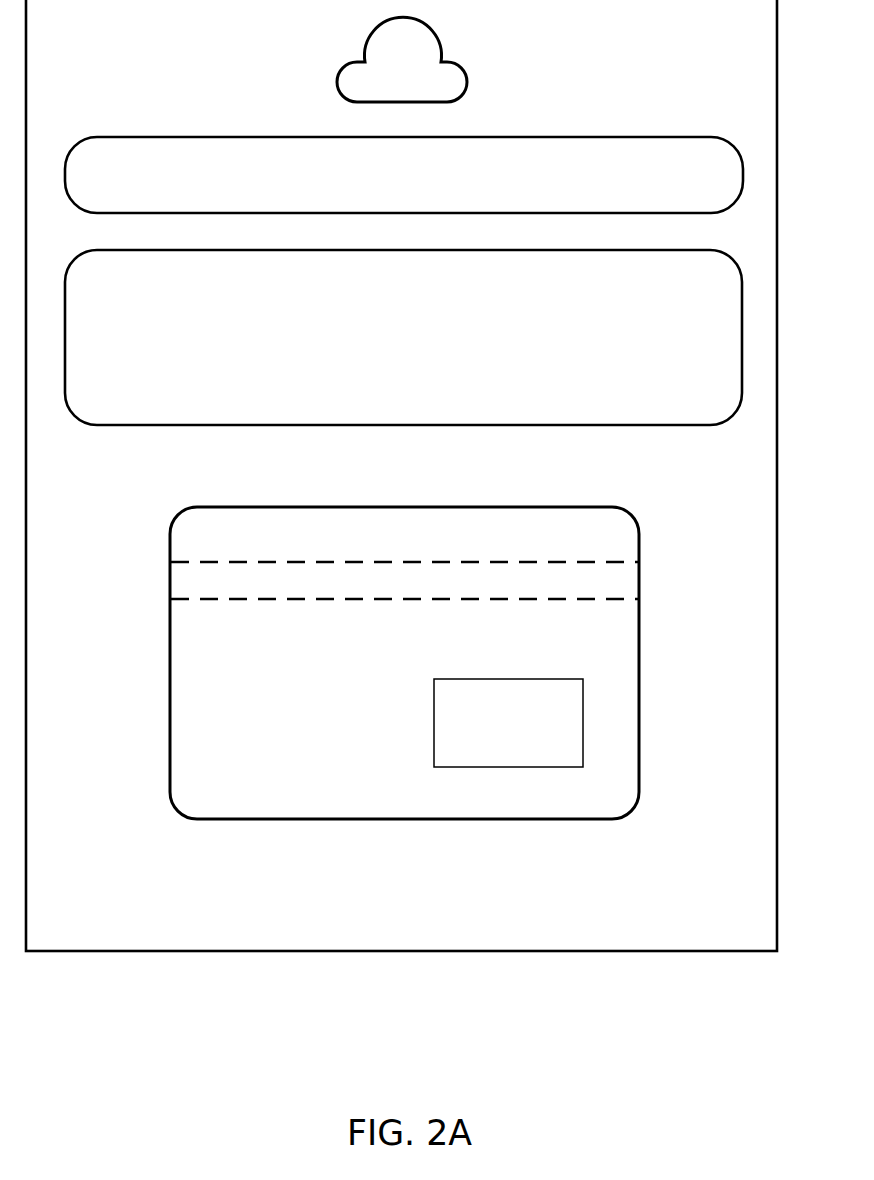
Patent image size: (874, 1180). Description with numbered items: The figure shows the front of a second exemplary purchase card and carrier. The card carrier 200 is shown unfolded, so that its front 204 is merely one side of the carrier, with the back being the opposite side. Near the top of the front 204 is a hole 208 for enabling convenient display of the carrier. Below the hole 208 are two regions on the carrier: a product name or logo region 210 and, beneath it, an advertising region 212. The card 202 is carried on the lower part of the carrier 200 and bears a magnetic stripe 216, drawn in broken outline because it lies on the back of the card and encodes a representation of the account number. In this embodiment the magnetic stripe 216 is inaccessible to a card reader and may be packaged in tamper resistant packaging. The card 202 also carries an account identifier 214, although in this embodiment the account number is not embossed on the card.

The card carrier 200 is at (640, 951).
The card 202 is at (402, 820).
The front portion 204 is at (735, 57).
The hole 208 is at (468, 80).
The product name or logo region 210 is at (716, 189).
The advertising region 212 is at (716, 391).
The account identifier 214 is at (568, 751).
The magnetic stripe 216 is at (639, 574).